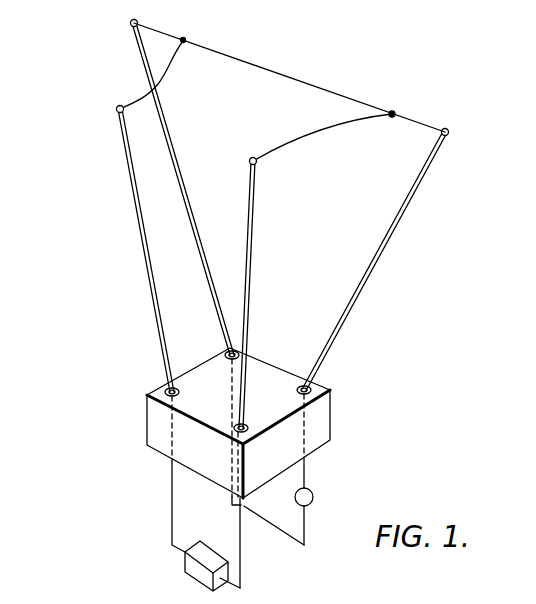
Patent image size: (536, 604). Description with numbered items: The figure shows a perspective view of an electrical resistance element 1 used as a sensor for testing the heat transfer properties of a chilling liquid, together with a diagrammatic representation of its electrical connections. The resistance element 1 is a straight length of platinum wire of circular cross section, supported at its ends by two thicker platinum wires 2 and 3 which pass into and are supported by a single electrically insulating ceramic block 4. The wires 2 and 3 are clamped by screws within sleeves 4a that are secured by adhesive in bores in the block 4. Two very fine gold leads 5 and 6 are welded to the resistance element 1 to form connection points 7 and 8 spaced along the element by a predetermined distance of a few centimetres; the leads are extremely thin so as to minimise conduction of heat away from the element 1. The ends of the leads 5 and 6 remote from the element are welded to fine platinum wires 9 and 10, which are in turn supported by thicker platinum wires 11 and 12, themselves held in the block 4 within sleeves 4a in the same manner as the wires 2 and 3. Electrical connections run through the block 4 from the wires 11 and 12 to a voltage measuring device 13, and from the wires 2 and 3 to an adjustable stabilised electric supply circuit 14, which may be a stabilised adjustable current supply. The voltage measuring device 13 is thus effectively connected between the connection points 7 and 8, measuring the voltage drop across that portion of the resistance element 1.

The electrical resistance element 1 is at (168, 34).
The thicker platinum wire 2 is at (190, 202).
The thicker platinum wire 3 is at (412, 199).
The electrically insulating block 4 is at (315, 425).
The sleeves 4a is at (165, 389).
The fine gold lead 5 is at (168, 68).
The fine gold lead 6 is at (318, 131).
The connection point 7 is at (185, 40).
The connection point 8 is at (392, 112).
The fine platinum wire 9 is at (136, 112).
The fine platinum wire 10 is at (266, 152).
The thicker platinum wire 11 is at (137, 215).
The thicker platinum wire 12 is at (250, 214).
The voltage measuring device 13 is at (192, 565).
The adjustable stabilised electric supply circuit 14 is at (314, 496).